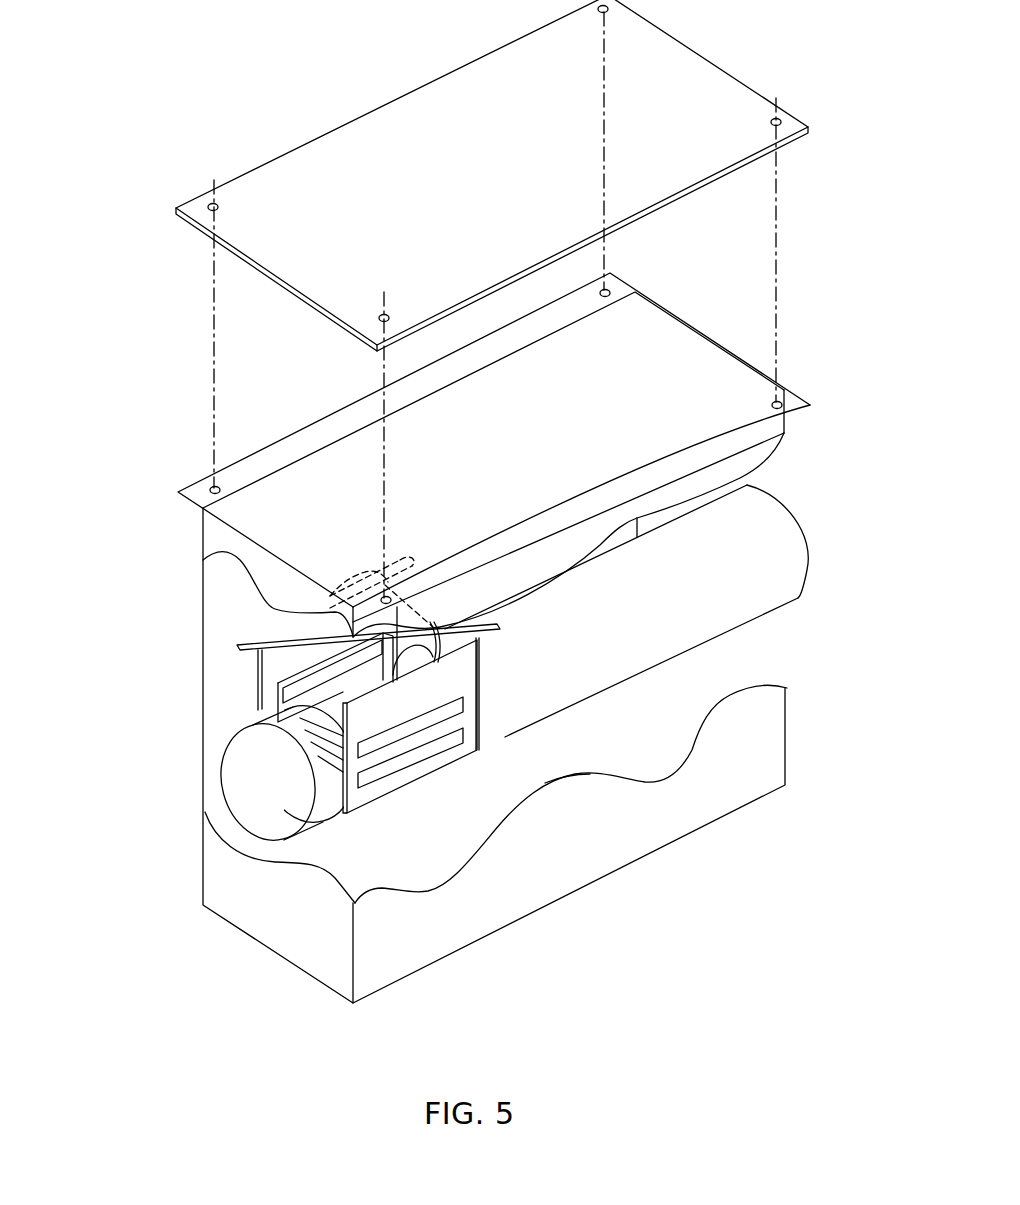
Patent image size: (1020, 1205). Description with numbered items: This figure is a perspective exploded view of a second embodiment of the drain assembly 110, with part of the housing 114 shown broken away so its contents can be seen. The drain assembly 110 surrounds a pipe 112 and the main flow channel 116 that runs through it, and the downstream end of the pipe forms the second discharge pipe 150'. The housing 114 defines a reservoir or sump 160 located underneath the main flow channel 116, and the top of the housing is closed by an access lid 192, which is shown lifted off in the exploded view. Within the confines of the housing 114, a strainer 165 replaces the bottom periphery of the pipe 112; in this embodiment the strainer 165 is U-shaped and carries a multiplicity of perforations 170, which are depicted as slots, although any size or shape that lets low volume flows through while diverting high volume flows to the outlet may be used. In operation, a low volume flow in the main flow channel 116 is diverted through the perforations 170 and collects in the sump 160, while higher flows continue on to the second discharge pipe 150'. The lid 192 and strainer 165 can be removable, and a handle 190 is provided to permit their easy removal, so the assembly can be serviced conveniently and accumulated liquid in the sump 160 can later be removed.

The drain assembly 110 is at (122, 387).
The pipe 112 is at (220, 765).
The housing 114 is at (595, 835).
The main flow channel 116 is at (260, 787).
The second discharge pipe 150' is at (683, 611).
The sump 160 is at (595, 735).
The strainer 165 is at (448, 743).
The perforations 170 is at (402, 780).
The handle 190 is at (440, 628).
The access lid 192 is at (657, 155).